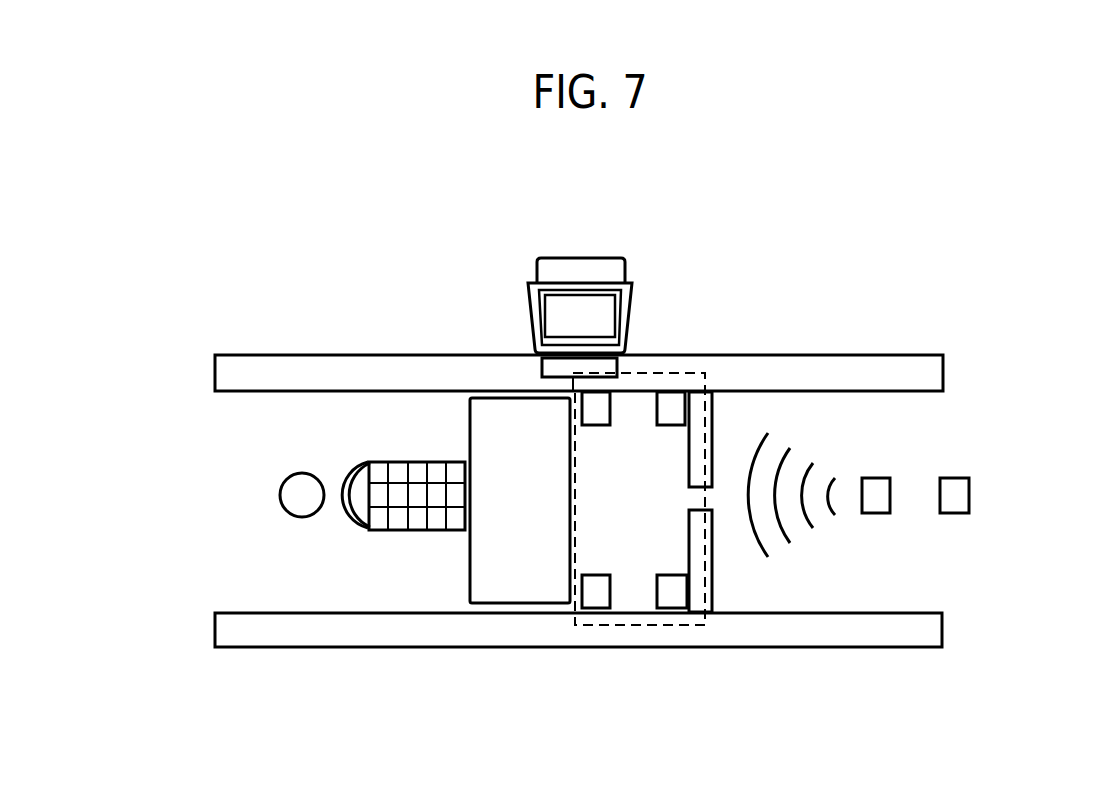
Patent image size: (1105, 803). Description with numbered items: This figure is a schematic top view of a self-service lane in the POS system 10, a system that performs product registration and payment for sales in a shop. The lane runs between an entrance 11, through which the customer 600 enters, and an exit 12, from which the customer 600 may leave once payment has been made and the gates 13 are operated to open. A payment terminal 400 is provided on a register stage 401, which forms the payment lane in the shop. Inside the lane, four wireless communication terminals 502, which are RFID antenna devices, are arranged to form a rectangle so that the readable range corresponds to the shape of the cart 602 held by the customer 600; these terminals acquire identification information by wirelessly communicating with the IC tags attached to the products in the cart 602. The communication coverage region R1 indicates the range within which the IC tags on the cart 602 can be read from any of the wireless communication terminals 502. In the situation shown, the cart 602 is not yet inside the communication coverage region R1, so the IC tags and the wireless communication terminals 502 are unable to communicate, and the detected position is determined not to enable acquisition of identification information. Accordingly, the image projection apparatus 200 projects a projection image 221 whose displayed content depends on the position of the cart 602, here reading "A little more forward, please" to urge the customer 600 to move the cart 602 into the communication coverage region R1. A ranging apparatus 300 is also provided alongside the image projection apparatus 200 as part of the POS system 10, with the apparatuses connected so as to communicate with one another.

The POS system 10 is at (851, 230).
The entrance 11 is at (194, 556).
The exit 12 is at (954, 579).
The gates 13 is at (712, 412).
The image projection apparatus 200 is at (955, 478).
The projection image 221 is at (530, 605).
The ranging apparatus 300 is at (876, 478).
The payment terminal 400 is at (578, 259).
The register stage 401 is at (900, 355).
The wireless communication terminal 502 is at (580, 405).
The customer 600 is at (325, 515).
The cart 602 is at (418, 532).
The communication coverage region R1 is at (712, 625).